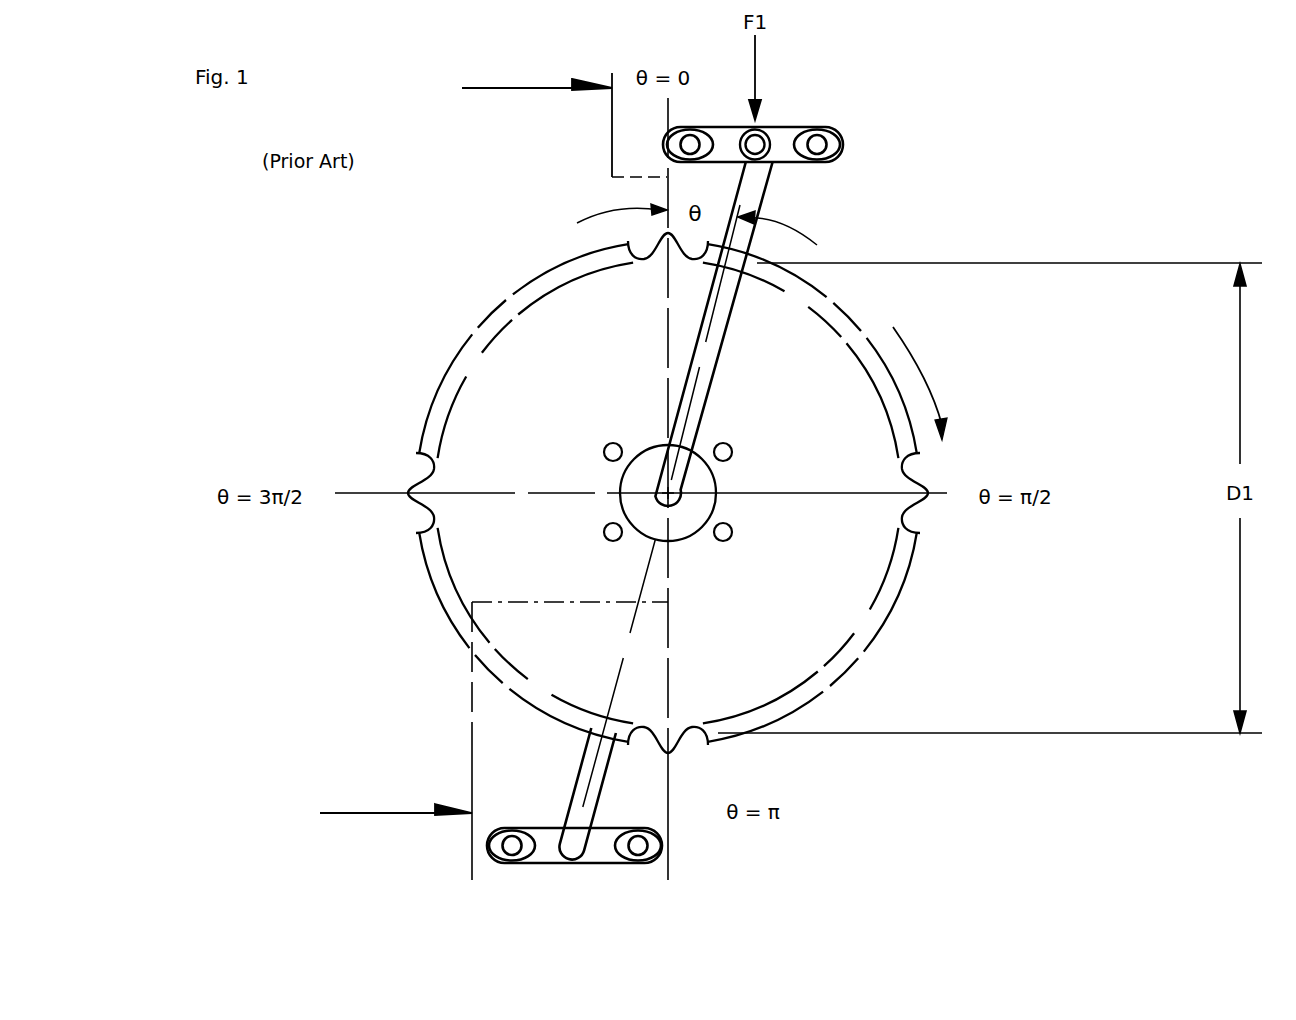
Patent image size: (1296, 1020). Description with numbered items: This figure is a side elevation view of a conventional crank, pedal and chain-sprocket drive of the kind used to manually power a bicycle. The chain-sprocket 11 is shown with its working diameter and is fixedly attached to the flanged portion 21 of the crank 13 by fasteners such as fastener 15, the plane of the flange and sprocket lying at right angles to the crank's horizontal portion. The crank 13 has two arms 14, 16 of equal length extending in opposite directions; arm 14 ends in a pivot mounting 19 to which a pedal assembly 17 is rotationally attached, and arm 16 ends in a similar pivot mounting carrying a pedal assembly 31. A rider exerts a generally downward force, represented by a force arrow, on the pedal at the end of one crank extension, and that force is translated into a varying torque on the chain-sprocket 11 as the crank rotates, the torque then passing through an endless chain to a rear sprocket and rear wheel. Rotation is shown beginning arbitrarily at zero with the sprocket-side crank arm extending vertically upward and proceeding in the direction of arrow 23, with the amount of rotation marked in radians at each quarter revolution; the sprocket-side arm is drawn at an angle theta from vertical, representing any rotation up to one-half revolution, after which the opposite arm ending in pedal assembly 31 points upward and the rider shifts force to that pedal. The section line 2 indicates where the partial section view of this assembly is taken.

The section line 2 is at (453, 452).
The chain-sprocket 11 is at (492, 398).
The crank 13 is at (700, 412).
The crank arm 14 is at (708, 298).
The fastener 15 is at (604, 535).
The crank arm 16 is at (602, 760).
The pedal assembly 17 is at (787, 162).
The pivot mounting 19 is at (757, 127).
The flanged portion 21 is at (683, 523).
The arrow 23 is at (913, 358).
The pedal assembly 31 is at (545, 838).